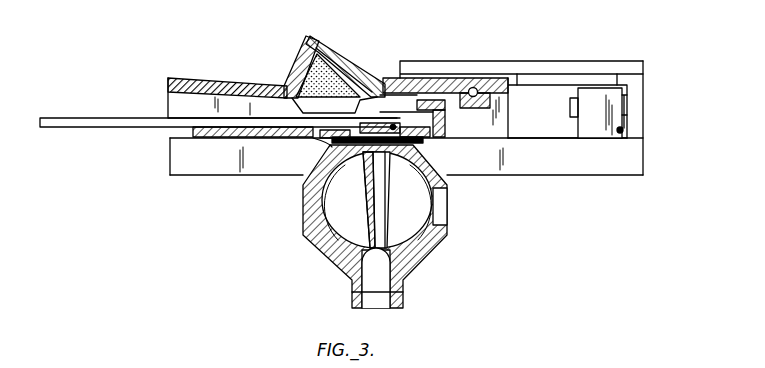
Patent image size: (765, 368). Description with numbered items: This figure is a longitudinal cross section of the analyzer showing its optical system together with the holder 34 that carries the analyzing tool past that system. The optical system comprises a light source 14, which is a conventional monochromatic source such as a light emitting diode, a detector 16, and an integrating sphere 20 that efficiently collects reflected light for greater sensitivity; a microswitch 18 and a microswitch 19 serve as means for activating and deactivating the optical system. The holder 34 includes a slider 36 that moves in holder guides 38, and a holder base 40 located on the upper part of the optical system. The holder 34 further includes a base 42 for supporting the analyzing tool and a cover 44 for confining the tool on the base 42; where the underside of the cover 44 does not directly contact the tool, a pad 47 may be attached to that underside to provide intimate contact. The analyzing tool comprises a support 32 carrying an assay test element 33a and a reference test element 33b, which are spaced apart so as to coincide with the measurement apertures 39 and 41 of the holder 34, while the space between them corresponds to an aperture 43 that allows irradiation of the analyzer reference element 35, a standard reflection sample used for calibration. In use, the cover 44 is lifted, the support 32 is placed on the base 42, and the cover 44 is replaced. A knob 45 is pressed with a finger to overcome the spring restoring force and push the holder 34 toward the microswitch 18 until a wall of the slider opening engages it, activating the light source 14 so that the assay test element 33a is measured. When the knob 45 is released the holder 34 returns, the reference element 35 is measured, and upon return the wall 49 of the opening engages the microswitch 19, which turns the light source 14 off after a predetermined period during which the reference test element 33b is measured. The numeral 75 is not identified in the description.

The light source 14 is at (402, 283).
The detector 16 is at (450, 215).
The microswitch 18 is at (575, 95).
The microswitch 19 is at (625, 105).
The integrating sphere 20 is at (428, 252).
The support 32 is at (120, 117).
The assay test element 33a is at (290, 72).
The reference test element 33b is at (390, 75).
The holder 34 is at (130, 144).
The analyzer reference element 35 is at (308, 150).
The slider 36 is at (495, 123).
The holder guides 38 is at (530, 65).
The aperture 39 is at (285, 140).
The holder base 40 is at (523, 167).
The aperture 41 is at (390, 110).
The base 42 is at (230, 140).
The aperture 43 is at (322, 140).
The cover 44 is at (222, 82).
The knob 45 is at (302, 47).
The pad 47 is at (512, 115).
The wall 49 is at (620, 130).
The ridge 75 is at (322, 60).